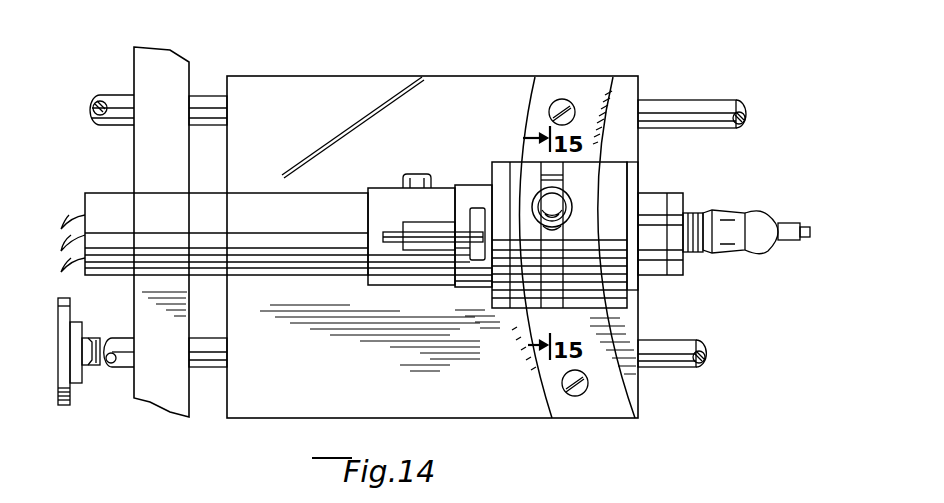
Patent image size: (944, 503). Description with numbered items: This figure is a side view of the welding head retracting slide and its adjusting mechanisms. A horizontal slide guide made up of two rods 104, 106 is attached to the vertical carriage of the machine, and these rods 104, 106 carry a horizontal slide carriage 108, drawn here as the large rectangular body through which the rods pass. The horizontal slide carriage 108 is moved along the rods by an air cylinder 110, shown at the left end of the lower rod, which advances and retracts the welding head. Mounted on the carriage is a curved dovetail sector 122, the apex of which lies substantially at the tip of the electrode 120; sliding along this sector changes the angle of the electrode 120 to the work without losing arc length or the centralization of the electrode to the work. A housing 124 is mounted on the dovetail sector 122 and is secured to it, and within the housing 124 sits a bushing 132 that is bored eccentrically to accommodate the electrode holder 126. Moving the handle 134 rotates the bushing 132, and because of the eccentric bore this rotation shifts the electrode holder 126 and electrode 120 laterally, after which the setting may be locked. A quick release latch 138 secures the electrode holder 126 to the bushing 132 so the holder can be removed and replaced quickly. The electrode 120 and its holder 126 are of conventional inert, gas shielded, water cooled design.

The rod 104 is at (733, 82).
The rod 106 is at (665, 367).
The horizontal slide carriage 108 is at (462, 75).
The air cylinder 110 is at (66, 406).
The electrode 120 is at (808, 226).
The dovetail sector 122 is at (595, 85).
The housing 124 is at (499, 162).
The electrode holder 126 is at (272, 160).
The bushing 132 is at (471, 183).
The handle 134 is at (572, 213).
The quick release latch 138 is at (393, 232).